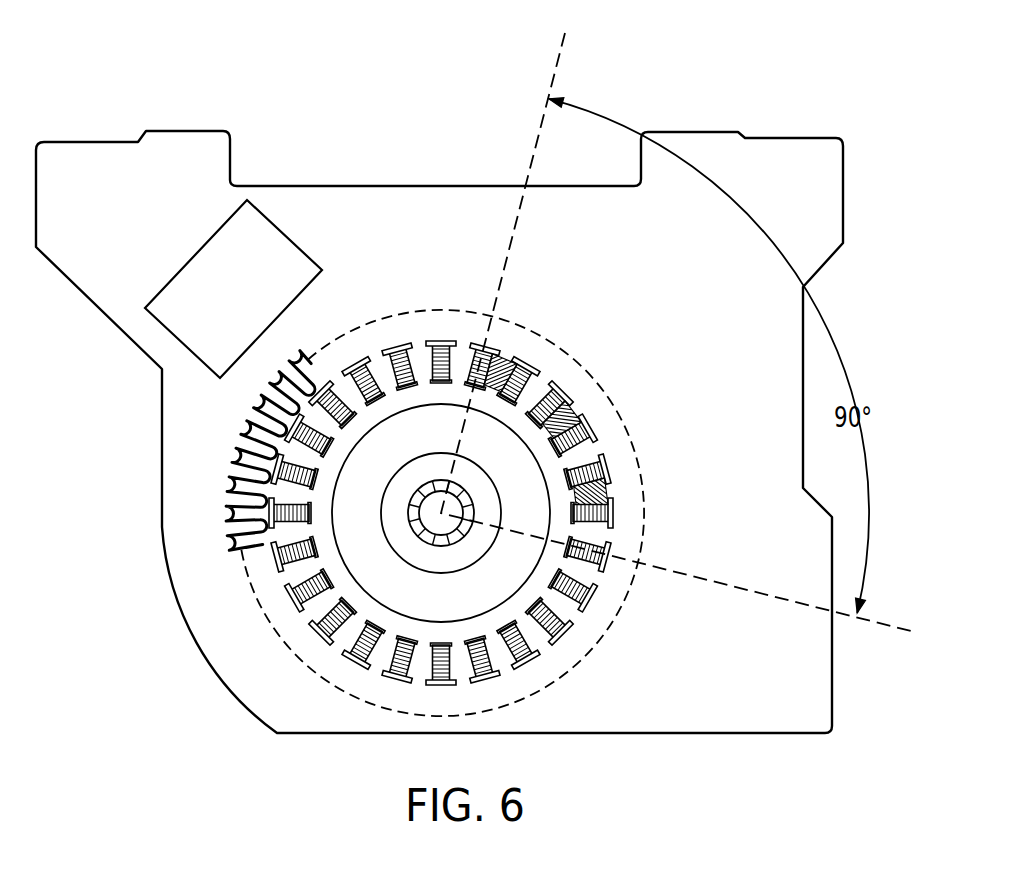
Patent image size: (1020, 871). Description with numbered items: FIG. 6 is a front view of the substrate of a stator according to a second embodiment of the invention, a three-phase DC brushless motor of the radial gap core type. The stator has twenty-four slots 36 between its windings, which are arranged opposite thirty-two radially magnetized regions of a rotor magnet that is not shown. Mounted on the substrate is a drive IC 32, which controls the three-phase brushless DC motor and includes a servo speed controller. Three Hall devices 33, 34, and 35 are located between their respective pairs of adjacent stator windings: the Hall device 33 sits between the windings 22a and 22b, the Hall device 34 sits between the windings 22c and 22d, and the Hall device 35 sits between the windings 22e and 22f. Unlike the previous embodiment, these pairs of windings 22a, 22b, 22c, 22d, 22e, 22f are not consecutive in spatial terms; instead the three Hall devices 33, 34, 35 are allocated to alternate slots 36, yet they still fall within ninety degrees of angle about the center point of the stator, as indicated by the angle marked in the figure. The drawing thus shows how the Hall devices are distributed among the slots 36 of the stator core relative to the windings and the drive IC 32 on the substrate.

The stator winding 22a is at (486, 350).
The stator winding 22b is at (526, 365).
The stator winding 22c is at (566, 387).
The stator winding 22d is at (598, 430).
The stator winding 22e is at (616, 466).
The stator winding 22f is at (622, 515).
The drive IC 32 is at (188, 317).
The Hall device 33 is at (506, 355).
The Hall device 34 is at (574, 413).
The Hall device 35 is at (614, 495).
The slots 36 is at (601, 631).